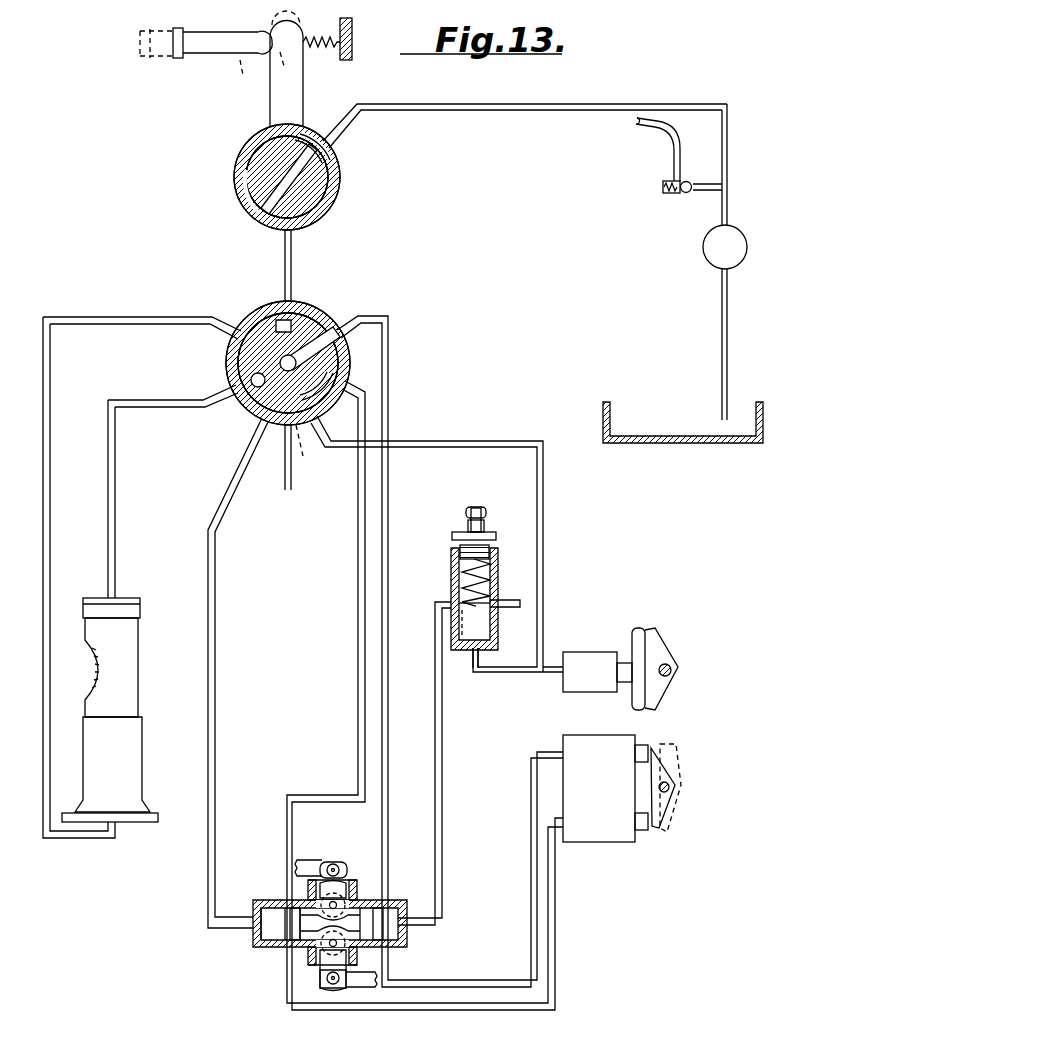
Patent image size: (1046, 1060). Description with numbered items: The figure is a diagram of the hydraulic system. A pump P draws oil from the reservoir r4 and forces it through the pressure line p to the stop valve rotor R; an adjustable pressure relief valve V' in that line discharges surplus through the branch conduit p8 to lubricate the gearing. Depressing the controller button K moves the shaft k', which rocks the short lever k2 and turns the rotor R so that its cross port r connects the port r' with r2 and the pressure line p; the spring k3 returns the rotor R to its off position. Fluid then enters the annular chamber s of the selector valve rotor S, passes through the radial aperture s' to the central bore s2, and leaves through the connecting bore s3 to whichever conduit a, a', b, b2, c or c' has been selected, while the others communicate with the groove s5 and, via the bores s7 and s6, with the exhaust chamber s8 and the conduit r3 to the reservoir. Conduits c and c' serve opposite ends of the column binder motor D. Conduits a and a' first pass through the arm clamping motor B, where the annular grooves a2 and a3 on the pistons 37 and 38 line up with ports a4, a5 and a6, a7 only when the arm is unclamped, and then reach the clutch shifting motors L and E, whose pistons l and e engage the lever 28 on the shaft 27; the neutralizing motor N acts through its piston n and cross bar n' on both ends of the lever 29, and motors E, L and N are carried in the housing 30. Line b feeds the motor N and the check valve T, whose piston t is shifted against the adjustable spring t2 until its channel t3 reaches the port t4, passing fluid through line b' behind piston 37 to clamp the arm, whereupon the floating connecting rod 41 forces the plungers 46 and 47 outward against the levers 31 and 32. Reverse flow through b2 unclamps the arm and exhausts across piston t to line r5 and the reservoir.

The controller button K is at (178, 58).
The axially movable shaft k' is at (227, 60).
The short lever k2 is at (280, 103).
The spring k3 is at (327, 50).
The stop valve rotor R is at (235, 176).
The cross port r is at (305, 176).
The port r2 is at (319, 136).
The port r' is at (304, 266).
The conduit r3 is at (286, 463).
The reservoir r4 is at (603, 418).
The line r5 is at (509, 608).
The pressure line p is at (500, 111).
The branch conduit p8 is at (672, 151).
The adjustable pressure relief valve V' is at (665, 209).
The pump P is at (725, 247).
The selector valve rotor S is at (253, 358).
The annular chamber s is at (289, 343).
The radial aperture s' is at (301, 298).
The central bore s2 is at (336, 364).
The connecting bore s3 is at (331, 331).
The annular groove s5 is at (250, 410).
The bore s6 is at (240, 398).
The bore s7 is at (256, 370).
The exhaust chamber s8 is at (306, 448).
The conduit c is at (173, 491).
The conduit c' is at (142, 577).
The conduit a is at (450, 651).
The conduit a' is at (425, 695).
The annular groove a2 is at (409, 926).
The annular groove a3 is at (287, 927).
The port a4 is at (383, 920).
The port a5 is at (384, 946).
The port a6 is at (293, 910).
The port a7 is at (290, 942).
The conduit b is at (437, 539).
The line b' is at (437, 763).
The conduit b2 is at (218, 732).
The column binder motor D is at (110, 710).
The check valve T is at (452, 566).
The piston t is at (470, 624).
The adjustable spring t2 is at (481, 580).
The channel t3 is at (469, 650).
The port t4 is at (452, 598).
The neutralizing motor N is at (590, 672).
The piston n is at (623, 652).
The cross bar n' is at (645, 653).
The double ended lever 29 is at (662, 652).
The shaft 27 is at (678, 667).
The housing 30 is at (590, 693).
The arm lowering motor L is at (599, 788).
The elevating motor E is at (589, 828).
The piston l is at (642, 746).
The piston e is at (645, 831).
The double ended lever 28 is at (664, 812).
The arm clamping motor B is at (331, 860).
The lever 32 is at (308, 861).
The plunger 47 is at (345, 880).
The floating connecting rod 41 is at (344, 896).
The piston 37 is at (372, 918).
The piston 38 is at (290, 930).
The plunger 46 is at (320, 965).
The lever 31 is at (358, 988).